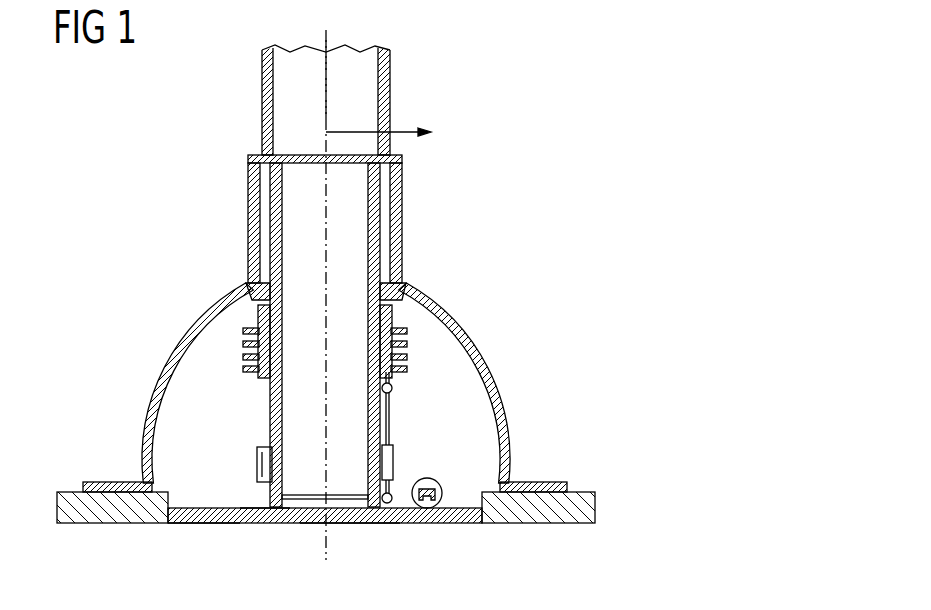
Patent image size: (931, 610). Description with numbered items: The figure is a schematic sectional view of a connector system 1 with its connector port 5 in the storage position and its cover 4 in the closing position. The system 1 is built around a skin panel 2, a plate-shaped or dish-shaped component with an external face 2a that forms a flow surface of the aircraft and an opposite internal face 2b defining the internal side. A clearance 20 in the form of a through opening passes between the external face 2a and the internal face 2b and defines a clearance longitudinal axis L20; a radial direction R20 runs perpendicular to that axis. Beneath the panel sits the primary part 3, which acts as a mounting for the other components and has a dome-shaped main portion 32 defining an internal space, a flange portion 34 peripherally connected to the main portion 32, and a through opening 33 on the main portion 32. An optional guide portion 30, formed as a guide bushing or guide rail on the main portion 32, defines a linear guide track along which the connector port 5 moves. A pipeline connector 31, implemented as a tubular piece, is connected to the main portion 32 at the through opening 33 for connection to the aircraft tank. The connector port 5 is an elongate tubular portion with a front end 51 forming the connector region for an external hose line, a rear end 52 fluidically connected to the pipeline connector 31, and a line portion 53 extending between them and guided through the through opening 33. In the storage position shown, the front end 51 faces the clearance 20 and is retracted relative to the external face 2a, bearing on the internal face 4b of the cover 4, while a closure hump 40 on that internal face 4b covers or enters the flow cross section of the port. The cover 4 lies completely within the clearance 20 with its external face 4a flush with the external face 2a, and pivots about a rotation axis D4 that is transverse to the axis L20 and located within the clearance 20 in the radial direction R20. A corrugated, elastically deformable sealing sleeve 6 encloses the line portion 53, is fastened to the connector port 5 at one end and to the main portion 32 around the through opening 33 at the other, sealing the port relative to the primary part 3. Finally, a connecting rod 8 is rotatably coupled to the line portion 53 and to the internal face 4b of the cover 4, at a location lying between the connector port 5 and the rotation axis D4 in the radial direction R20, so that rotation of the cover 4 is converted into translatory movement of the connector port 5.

The connector system 1 is at (98, 188).
The skin panel 2 is at (536, 522).
The external face 2a is at (545, 522).
The internal face 2b is at (572, 487).
The primary part 3 is at (176, 361).
The cover 4 is at (230, 527).
The external face of the cover 4a is at (222, 526).
The internal face of the cover 4b is at (256, 512).
The connector port 5 is at (272, 405).
The sealing sleeve 6 is at (410, 342).
The connecting rod 8 is at (388, 421).
The clearance 20 is at (180, 512).
The guide portion 30 is at (257, 462).
The pipeline connector 31 is at (424, 264).
The main portion 32 is at (490, 393).
The through opening 33 is at (260, 277).
The flange portion 34 is at (110, 482).
The closure hump 40 is at (338, 525).
The front end 51 is at (380, 526).
The rear end 52 is at (290, 158).
The line portion 53 is at (382, 196).
The rotation axis D4 is at (433, 520).
The clearance longitudinal axis L20 is at (320, 97).
The radial direction R20 is at (398, 131).